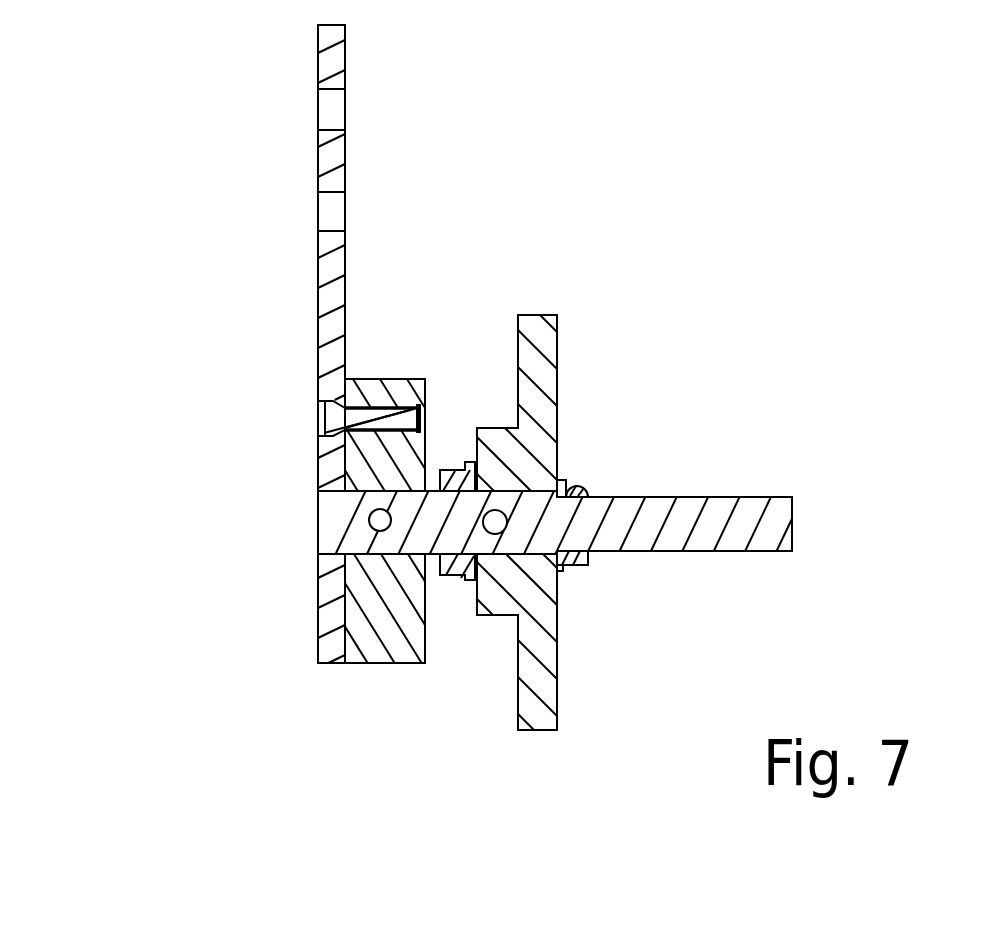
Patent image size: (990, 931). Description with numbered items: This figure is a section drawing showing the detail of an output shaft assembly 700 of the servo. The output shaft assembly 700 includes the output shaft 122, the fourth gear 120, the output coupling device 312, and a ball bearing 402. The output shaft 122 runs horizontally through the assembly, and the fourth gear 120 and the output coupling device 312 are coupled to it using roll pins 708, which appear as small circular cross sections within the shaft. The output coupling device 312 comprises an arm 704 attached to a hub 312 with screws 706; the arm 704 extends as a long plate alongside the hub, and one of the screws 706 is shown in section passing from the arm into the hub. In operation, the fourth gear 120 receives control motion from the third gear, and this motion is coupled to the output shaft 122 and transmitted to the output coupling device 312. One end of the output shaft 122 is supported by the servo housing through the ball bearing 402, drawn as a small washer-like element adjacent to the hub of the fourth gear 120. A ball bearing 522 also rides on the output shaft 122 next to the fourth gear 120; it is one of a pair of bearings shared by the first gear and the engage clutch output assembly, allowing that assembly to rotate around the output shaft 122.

The output shaft assembly 700 is at (932, 202).
The arm 704 is at (318, 258).
The screws 706 is at (318, 408).
The output coupling device 312 is at (377, 668).
The roll pins 708 is at (485, 531).
The ball bearing 402 is at (448, 470).
The fourth gear 120 is at (558, 380).
The ball bearing 522 is at (573, 488).
The output shaft 122 is at (757, 495).